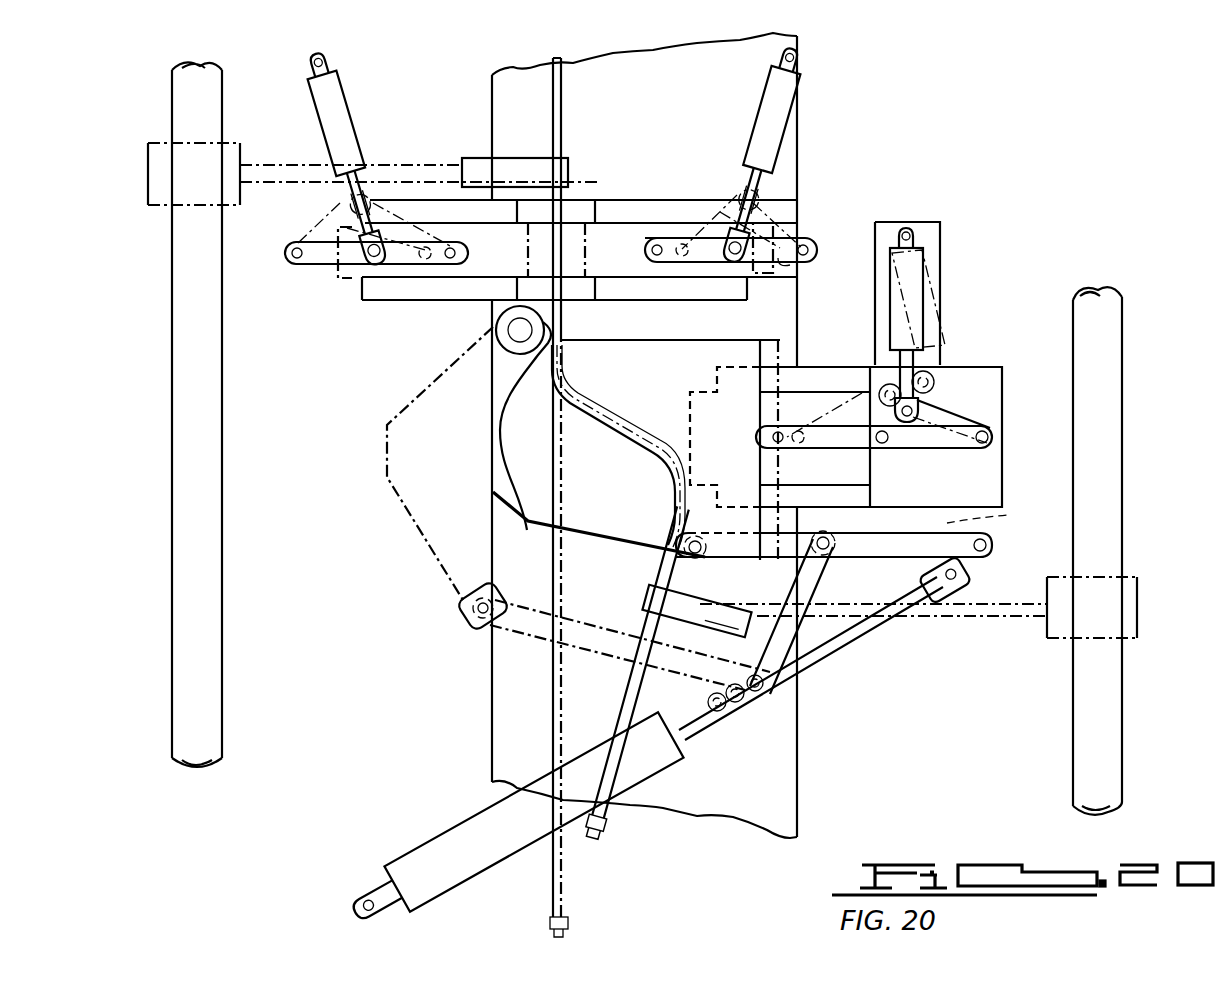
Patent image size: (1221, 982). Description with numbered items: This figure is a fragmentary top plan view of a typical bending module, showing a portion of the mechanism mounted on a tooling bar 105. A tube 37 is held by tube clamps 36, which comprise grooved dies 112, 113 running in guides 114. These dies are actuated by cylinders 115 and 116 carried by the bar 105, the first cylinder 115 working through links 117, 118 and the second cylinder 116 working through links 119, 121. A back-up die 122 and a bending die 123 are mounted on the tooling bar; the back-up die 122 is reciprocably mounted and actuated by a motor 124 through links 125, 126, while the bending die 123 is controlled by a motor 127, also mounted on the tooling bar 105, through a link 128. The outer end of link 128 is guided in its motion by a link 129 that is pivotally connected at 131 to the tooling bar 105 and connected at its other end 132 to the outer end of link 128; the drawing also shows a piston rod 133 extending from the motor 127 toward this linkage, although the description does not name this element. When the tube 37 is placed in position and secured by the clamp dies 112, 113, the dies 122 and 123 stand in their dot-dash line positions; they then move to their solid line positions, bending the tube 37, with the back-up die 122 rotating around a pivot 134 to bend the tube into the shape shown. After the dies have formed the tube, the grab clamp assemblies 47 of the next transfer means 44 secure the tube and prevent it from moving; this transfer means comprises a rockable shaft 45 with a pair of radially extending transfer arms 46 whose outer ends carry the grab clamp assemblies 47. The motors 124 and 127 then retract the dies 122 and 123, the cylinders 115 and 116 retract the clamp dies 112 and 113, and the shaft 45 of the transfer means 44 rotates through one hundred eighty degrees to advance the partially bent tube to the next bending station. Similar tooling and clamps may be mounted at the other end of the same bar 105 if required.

The tube clamps 36 is at (608, 200).
The tube 37 is at (562, 88).
The transfer means 44 is at (1136, 524).
The shaft 45 is at (1107, 378).
The transfer arms 46 is at (432, 116).
The grab clamp assemblies 47 is at (527, 160).
The tooling bar 105 is at (783, 760).
The grooved die 112 is at (473, 265).
The grooved die 113 is at (625, 237).
The guides 114 is at (682, 205).
The cylinder 115 is at (340, 110).
The cylinder 116 is at (787, 100).
The link 117 is at (327, 262).
The link 118 is at (388, 262).
The link 119 is at (707, 258).
The link 121 is at (780, 262).
The back-up die 122 is at (665, 318).
The bending die 123 is at (527, 527).
The motor 124 is at (915, 287).
The link 125 is at (850, 447).
The link 126 is at (948, 443).
The motor 127 is at (447, 850).
The link 128 is at (790, 550).
The link 129 is at (1003, 513).
The pivot 131 is at (827, 548).
The end 132 is at (990, 553).
The piston rod 133 is at (863, 627).
The pivot 134 is at (515, 340).